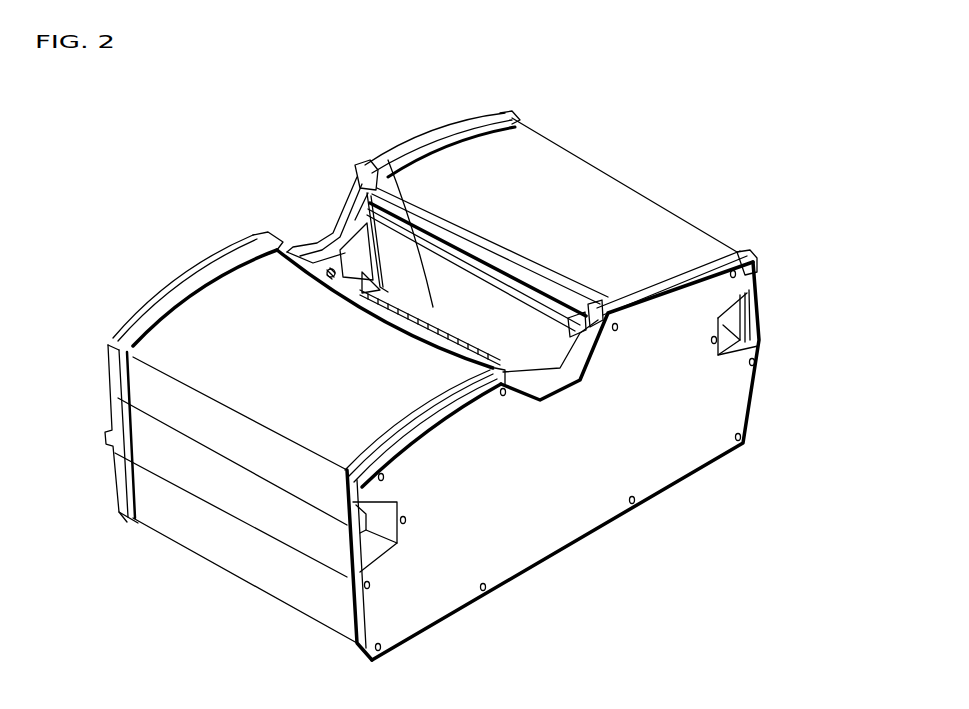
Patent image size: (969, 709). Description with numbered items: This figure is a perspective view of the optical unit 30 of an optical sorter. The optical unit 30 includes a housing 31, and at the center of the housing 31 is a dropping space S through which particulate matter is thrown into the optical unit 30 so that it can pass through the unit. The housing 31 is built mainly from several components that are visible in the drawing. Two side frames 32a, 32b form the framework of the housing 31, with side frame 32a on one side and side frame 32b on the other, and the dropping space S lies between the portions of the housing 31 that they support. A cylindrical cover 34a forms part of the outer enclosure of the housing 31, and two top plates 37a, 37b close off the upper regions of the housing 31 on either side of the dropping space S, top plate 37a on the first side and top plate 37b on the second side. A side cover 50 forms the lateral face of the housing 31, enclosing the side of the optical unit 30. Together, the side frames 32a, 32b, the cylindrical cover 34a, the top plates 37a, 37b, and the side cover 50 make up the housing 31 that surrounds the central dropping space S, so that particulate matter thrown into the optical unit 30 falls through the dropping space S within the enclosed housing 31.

The optical unit 30 is at (188, 113).
The housing 31 is at (173, 193).
The side frame 32a is at (187, 280).
The side frame 32b is at (430, 426).
The cylindrical cover 34a is at (207, 478).
The top plate 37a is at (227, 340).
The top plate 37b is at (572, 188).
The side cover 50 is at (693, 407).
The dropping space S is at (386, 161).